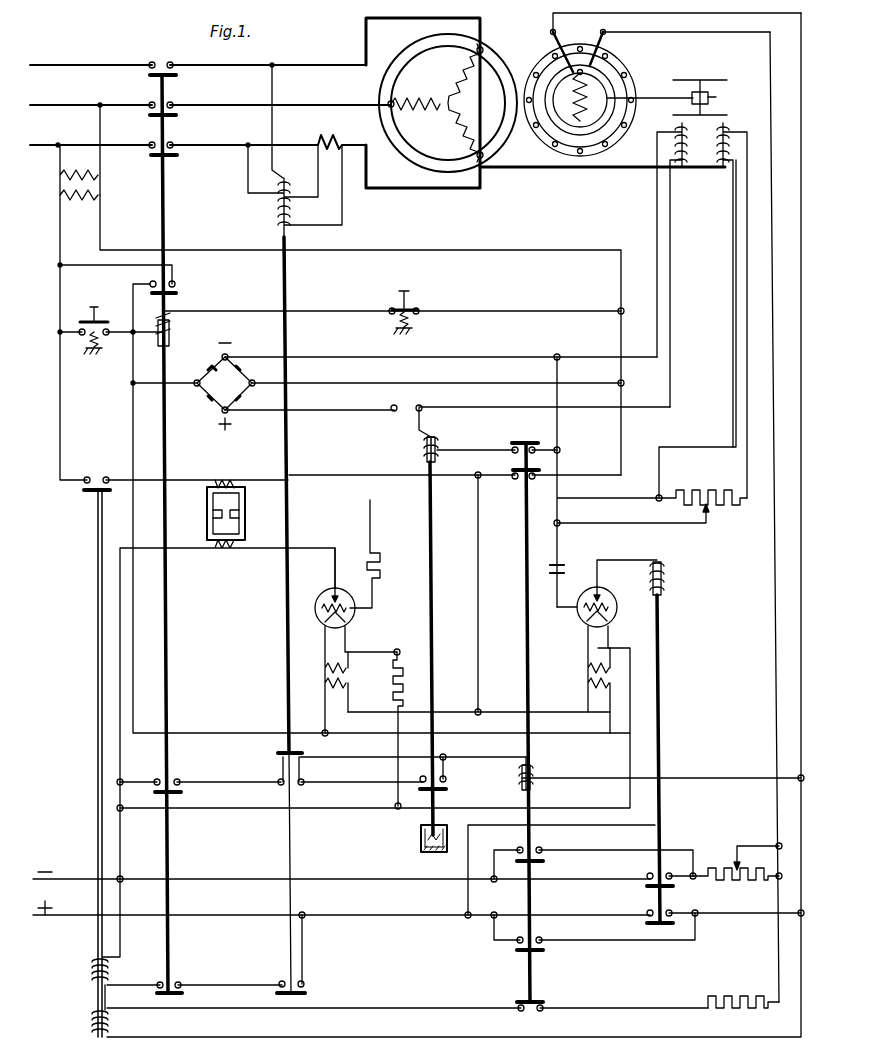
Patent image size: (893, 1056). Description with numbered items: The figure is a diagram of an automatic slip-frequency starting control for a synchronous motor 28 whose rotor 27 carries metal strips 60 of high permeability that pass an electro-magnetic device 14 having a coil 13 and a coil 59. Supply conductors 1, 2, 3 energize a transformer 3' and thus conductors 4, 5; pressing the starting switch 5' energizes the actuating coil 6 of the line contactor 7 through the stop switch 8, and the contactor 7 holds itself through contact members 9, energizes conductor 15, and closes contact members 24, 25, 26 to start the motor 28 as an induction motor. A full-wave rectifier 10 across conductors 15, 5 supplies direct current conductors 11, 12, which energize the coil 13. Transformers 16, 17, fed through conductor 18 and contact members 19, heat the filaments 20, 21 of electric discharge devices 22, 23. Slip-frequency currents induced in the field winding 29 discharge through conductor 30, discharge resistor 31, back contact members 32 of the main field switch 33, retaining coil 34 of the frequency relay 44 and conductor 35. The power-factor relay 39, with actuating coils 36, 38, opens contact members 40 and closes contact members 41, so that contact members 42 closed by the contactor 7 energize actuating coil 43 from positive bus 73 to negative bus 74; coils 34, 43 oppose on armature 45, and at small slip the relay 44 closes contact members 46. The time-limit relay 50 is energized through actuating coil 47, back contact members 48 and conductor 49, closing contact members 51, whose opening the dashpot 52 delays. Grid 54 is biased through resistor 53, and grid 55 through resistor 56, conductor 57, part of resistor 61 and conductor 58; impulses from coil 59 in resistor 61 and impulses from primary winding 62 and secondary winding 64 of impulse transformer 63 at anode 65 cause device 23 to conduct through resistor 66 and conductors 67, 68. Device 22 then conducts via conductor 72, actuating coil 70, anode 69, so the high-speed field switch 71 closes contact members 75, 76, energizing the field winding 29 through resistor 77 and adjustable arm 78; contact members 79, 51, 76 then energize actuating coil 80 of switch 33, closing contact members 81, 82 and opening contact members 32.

The conductor 1 is at (70, 64).
The conductor 2 is at (62, 104).
The conductor 3 is at (198, 135).
The transformer 3' is at (91, 152).
The conductor 4 is at (58, 242).
The conductor 5 is at (362, 335).
The starting switch 5' is at (111, 326).
The actuating coil 6 is at (172, 322).
The line contactor 7 is at (183, 203).
The stop switch 8 is at (412, 302).
The contact members 9 is at (175, 282).
The full-wave rectifier 10 is at (377, 386).
The direct current conductor 11 is at (318, 364).
The direct current conductor 12 is at (320, 414).
The coil 13 is at (668, 148).
The electro-magnetic device 14 is at (705, 178).
The conductor 15 is at (134, 286).
The transformer 16 is at (364, 682).
The transformer 17 is at (566, 681).
The conductor 18 is at (482, 656).
The contact members 19 is at (536, 480).
The filament 20 is at (578, 608).
The filament 21 is at (352, 626).
The electric discharge device 22 is at (581, 606).
The electric discharge device 23 is at (325, 607).
The contact members 24 is at (165, 62).
The contact members 25 is at (172, 104).
The contact members 26 is at (172, 145).
The rotor 27 is at (500, 58).
The synchronous motor 28 is at (524, 33).
The field winding 29 is at (600, 78).
The conductor 30 is at (774, 578).
The discharge resistor 31 is at (746, 984).
The back contact members 32 is at (545, 1010).
The main field switch 33 is at (512, 722).
The retaining coil 34 is at (108, 1022).
The conductor 35 is at (790, 272).
The actuating coil 36 is at (278, 170).
The actuating coil 38 is at (276, 210).
The power-factor relay 39 is at (316, 289).
The contact members 40 is at (298, 760).
The contact members 41 is at (304, 980).
The contact members 42 is at (180, 980).
The actuating coil 43 is at (108, 966).
The frequency relay 44 is at (88, 781).
The armature 45 is at (108, 998).
The contact members 46 is at (96, 476).
The actuating coil 47 is at (436, 436).
The back contact members 48 is at (536, 452).
The conductor 49 is at (560, 446).
The time-limit relay 50 is at (445, 648).
The contact members 51 is at (420, 774).
The dashpot 52 is at (420, 836).
The resistor 53 is at (566, 562).
The grid 54 is at (612, 624).
The grid 55 is at (318, 626).
The resistor 56 is at (348, 560).
The conductor 57 is at (472, 505).
The conductor 58 is at (660, 524).
The coil 59 is at (735, 136).
The metal strips 60 is at (716, 86).
The resistor 61 is at (714, 488).
The primary winding 62 is at (228, 478).
The impulse transformer 63 is at (241, 513).
The secondary winding 64 is at (228, 552).
The anode 65 is at (364, 578).
The resistor 66 is at (406, 662).
The conductor 67 is at (368, 800).
The conductor 68 is at (124, 842).
The anode 69 is at (604, 590).
The actuating coil 70 is at (662, 582).
The high-speed field switch 71 is at (673, 759).
The conductor 72 is at (466, 898).
The positive bus 73 is at (352, 918).
The negative bus 74 is at (352, 882).
The contact members 75 is at (668, 870).
The contact members 76 is at (672, 908).
The resistor 77 is at (724, 884).
The adjustable arm 78 is at (742, 858).
The contact members 79 is at (188, 768).
The actuating coil 80 is at (533, 760).
The contact members 81 is at (542, 846).
The contact members 82 is at (543, 938).